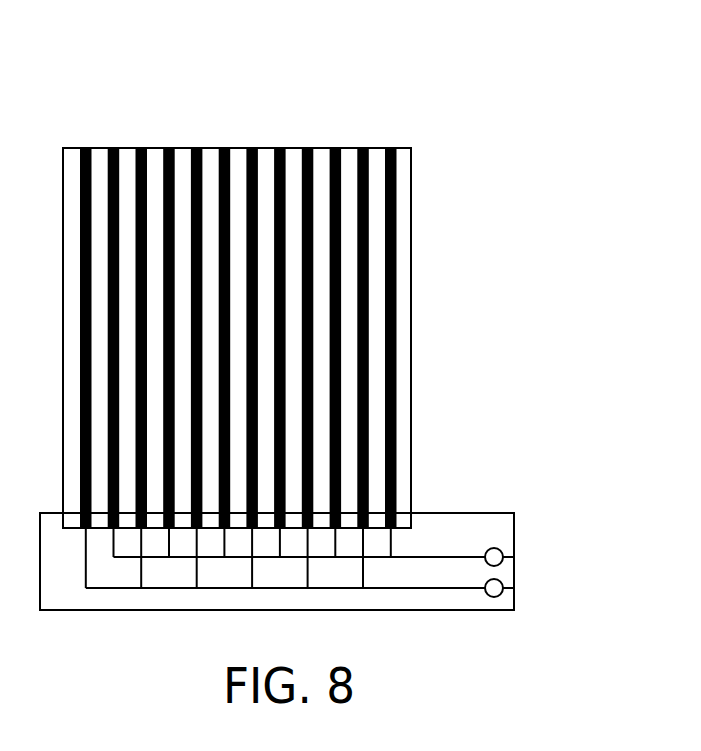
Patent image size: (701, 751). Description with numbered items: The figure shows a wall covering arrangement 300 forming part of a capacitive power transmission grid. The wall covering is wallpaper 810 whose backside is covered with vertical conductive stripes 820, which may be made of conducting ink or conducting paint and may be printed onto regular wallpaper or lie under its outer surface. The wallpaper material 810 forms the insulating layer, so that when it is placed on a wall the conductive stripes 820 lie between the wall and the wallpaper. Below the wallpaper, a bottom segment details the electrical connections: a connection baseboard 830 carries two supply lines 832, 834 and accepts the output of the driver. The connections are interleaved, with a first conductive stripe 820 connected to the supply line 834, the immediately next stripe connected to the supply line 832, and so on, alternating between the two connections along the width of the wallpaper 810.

The sensor device 300 is at (551, 143).
The wallpaper 810 is at (411, 207).
The conductive stripes 820 is at (411, 279).
The connection baseboard 830 is at (474, 513).
The supply line 832 is at (503, 557).
The supply line 834 is at (503, 588).